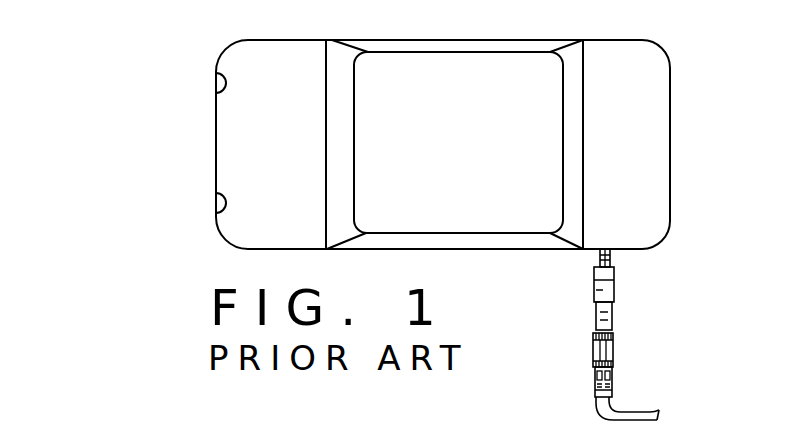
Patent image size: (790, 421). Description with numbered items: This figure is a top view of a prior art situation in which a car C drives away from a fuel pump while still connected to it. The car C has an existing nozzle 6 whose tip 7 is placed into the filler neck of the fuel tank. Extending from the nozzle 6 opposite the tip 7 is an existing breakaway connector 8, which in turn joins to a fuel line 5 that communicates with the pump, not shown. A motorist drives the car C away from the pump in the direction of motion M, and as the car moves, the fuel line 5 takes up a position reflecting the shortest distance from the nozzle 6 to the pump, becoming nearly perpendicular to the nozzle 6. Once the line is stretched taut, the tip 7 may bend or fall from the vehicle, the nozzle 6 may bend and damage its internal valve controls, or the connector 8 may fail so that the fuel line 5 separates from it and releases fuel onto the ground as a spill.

The car C is at (406, 68).
The direction of motion M is at (190, 140).
The tip 7 is at (610, 253).
The nozzle 6 is at (603, 288).
The breakaway connector 8 is at (613, 352).
The fuel line 5 is at (645, 413).